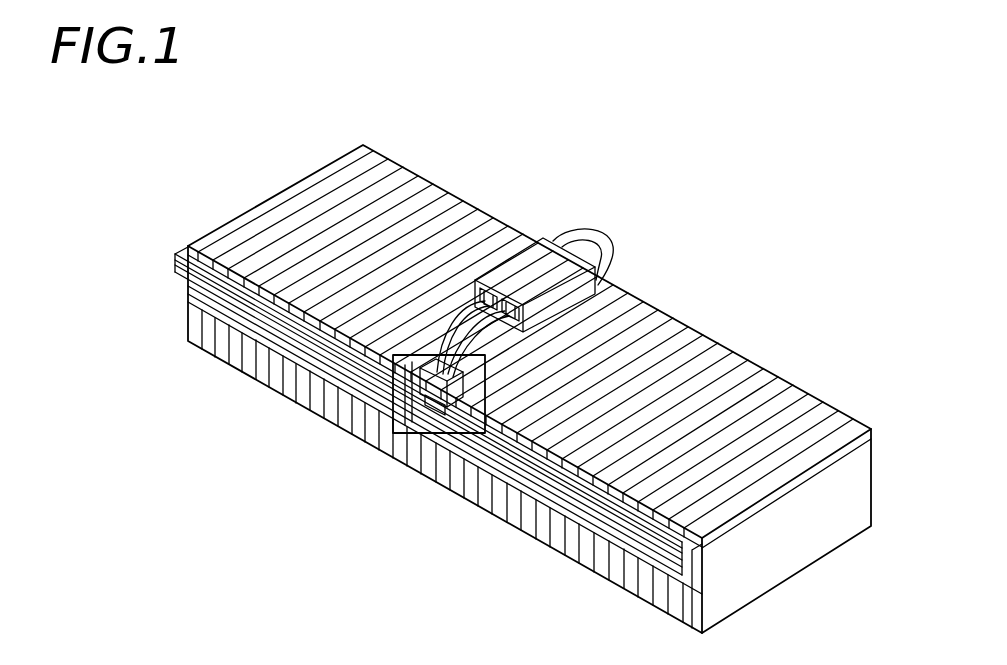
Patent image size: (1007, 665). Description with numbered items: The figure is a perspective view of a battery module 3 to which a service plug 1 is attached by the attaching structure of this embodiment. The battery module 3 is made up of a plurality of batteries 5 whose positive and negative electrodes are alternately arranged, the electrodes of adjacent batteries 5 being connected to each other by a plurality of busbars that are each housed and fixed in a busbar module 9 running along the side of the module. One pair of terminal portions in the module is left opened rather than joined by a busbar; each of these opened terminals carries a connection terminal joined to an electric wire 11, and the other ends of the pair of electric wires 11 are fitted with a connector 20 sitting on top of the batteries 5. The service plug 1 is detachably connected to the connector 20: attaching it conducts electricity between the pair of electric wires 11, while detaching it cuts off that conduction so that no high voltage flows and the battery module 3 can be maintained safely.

The service plug 1 is at (585, 292).
The battery module 3 is at (320, 502).
The battery 5 is at (335, 170).
The busbar module 9 is at (178, 263).
The electric wire 11 is at (452, 368).
The connector 20 is at (503, 268).